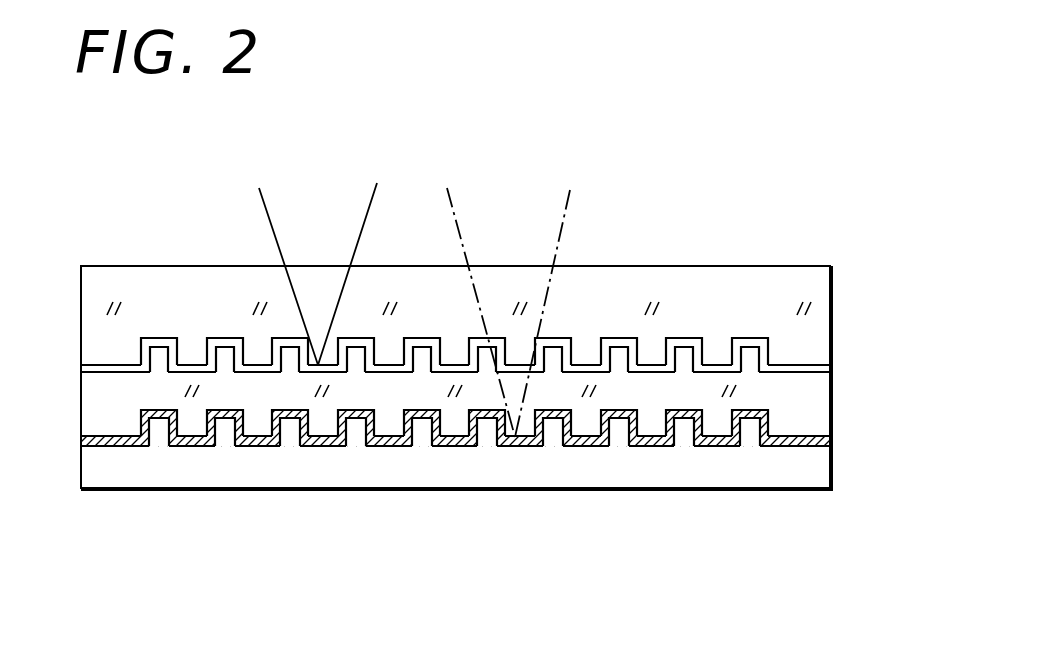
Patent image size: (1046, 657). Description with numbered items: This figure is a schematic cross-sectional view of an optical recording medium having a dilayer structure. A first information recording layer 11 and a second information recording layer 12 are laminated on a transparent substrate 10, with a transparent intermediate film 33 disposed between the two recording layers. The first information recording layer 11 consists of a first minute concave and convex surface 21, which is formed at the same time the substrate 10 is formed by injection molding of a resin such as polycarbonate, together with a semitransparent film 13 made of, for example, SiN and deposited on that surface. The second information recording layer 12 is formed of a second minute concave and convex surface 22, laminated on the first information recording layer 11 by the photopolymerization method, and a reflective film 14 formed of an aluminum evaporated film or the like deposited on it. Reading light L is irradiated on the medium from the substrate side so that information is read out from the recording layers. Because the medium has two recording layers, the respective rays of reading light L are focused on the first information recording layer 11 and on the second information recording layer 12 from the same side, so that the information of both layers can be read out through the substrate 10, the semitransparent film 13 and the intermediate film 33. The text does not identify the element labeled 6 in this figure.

The transparent substrate 10 is at (733, 288).
The transparent intermediate film 33 is at (803, 399).
The lower substrate 6 is at (807, 473).
The first information recording layer 11 is at (456, 472).
The semitransparent film 13 is at (250, 373).
The first minute concave and convex surface 21 is at (290, 355).
The second information recording layer 12 is at (459, 510).
The reflective film 14 is at (713, 445).
The second minute concave and convex surface 22 is at (750, 428).
The reading light L is at (272, 220).